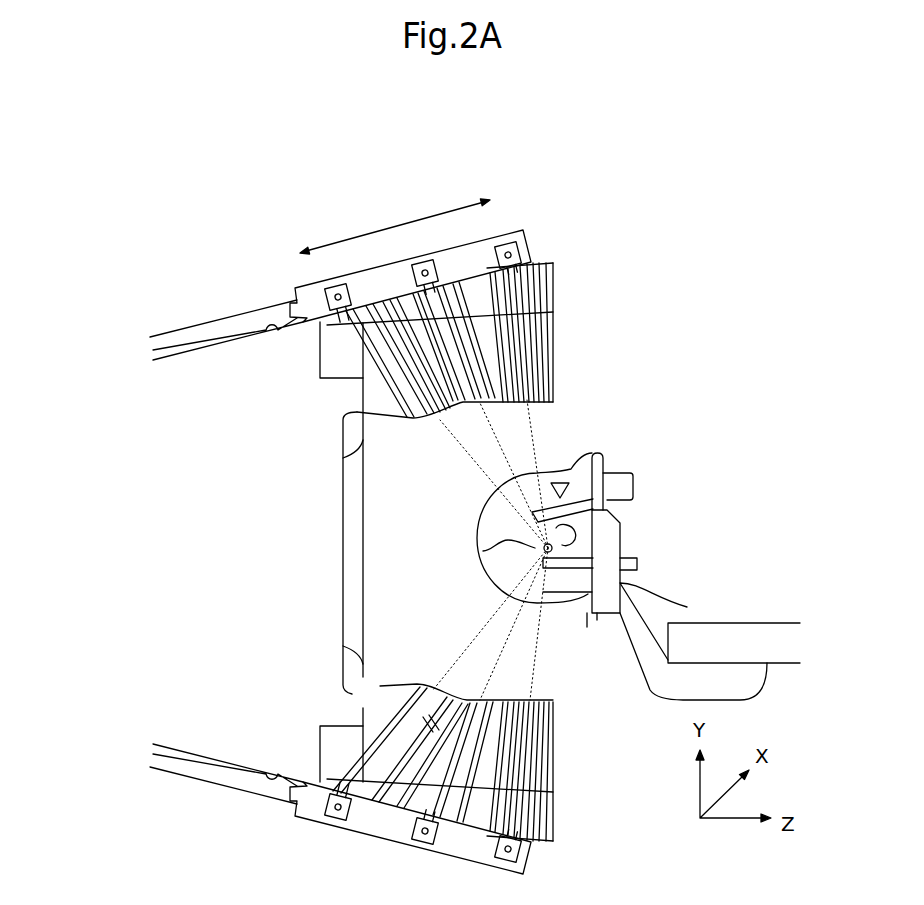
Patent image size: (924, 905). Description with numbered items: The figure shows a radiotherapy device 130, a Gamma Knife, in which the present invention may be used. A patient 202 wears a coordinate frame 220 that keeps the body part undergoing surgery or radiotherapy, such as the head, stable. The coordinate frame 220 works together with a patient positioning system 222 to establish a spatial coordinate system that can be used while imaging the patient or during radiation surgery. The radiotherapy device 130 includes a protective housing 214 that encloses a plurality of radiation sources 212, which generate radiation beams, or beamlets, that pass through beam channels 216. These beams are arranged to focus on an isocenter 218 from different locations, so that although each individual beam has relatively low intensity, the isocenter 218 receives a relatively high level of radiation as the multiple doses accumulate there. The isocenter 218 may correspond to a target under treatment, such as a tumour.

The radiotherapy device 130 is at (264, 487).
The patient 202 is at (682, 503).
The radiation sources 212 is at (530, 238).
The protective housing 214 is at (547, 297).
The beam channels 216 is at (543, 382).
The isocenter 218 is at (483, 551).
The coordinate frame 220 is at (592, 618).
The patient positioning system 222 is at (761, 624).